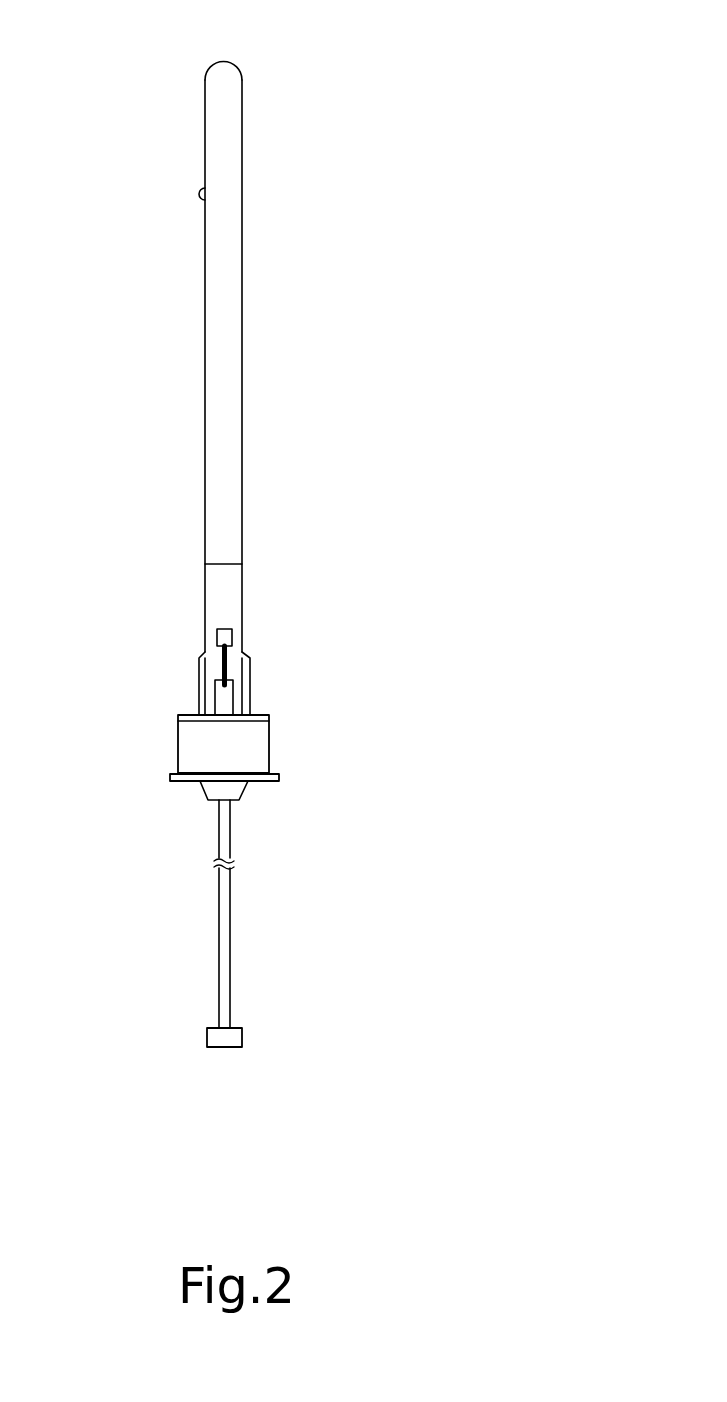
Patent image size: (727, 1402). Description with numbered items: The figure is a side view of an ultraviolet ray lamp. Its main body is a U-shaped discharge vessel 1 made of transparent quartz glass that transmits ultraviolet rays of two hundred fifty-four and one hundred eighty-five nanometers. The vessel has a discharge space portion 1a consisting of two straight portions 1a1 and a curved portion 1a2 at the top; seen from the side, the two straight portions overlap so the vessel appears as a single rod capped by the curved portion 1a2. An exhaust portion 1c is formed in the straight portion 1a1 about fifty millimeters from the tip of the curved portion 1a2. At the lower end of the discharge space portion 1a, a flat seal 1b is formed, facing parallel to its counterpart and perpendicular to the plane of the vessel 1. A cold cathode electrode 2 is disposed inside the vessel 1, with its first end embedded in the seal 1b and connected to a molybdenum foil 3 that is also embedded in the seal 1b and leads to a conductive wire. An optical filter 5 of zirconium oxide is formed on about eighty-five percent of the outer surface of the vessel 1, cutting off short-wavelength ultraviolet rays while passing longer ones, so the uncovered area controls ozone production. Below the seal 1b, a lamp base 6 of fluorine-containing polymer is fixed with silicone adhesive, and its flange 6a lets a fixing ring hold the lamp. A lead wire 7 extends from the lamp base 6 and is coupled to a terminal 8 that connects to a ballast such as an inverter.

The discharge vessel 1 is at (205, 368).
The discharge space portion 1a is at (243, 415).
The straight portion 1a1 is at (243, 268).
The curved portion 1a2 is at (245, 62).
The seal 1b is at (250, 693).
The exhaust portion 1c is at (194, 191).
The electrode 2 is at (217, 641).
The molybdenum foil 3 is at (215, 702).
The optical filter 5 is at (205, 517).
The lamp base 6 is at (178, 748).
The flange 6a is at (279, 778).
The lead wire 7 is at (219, 905).
The terminal 8 is at (207, 1035).